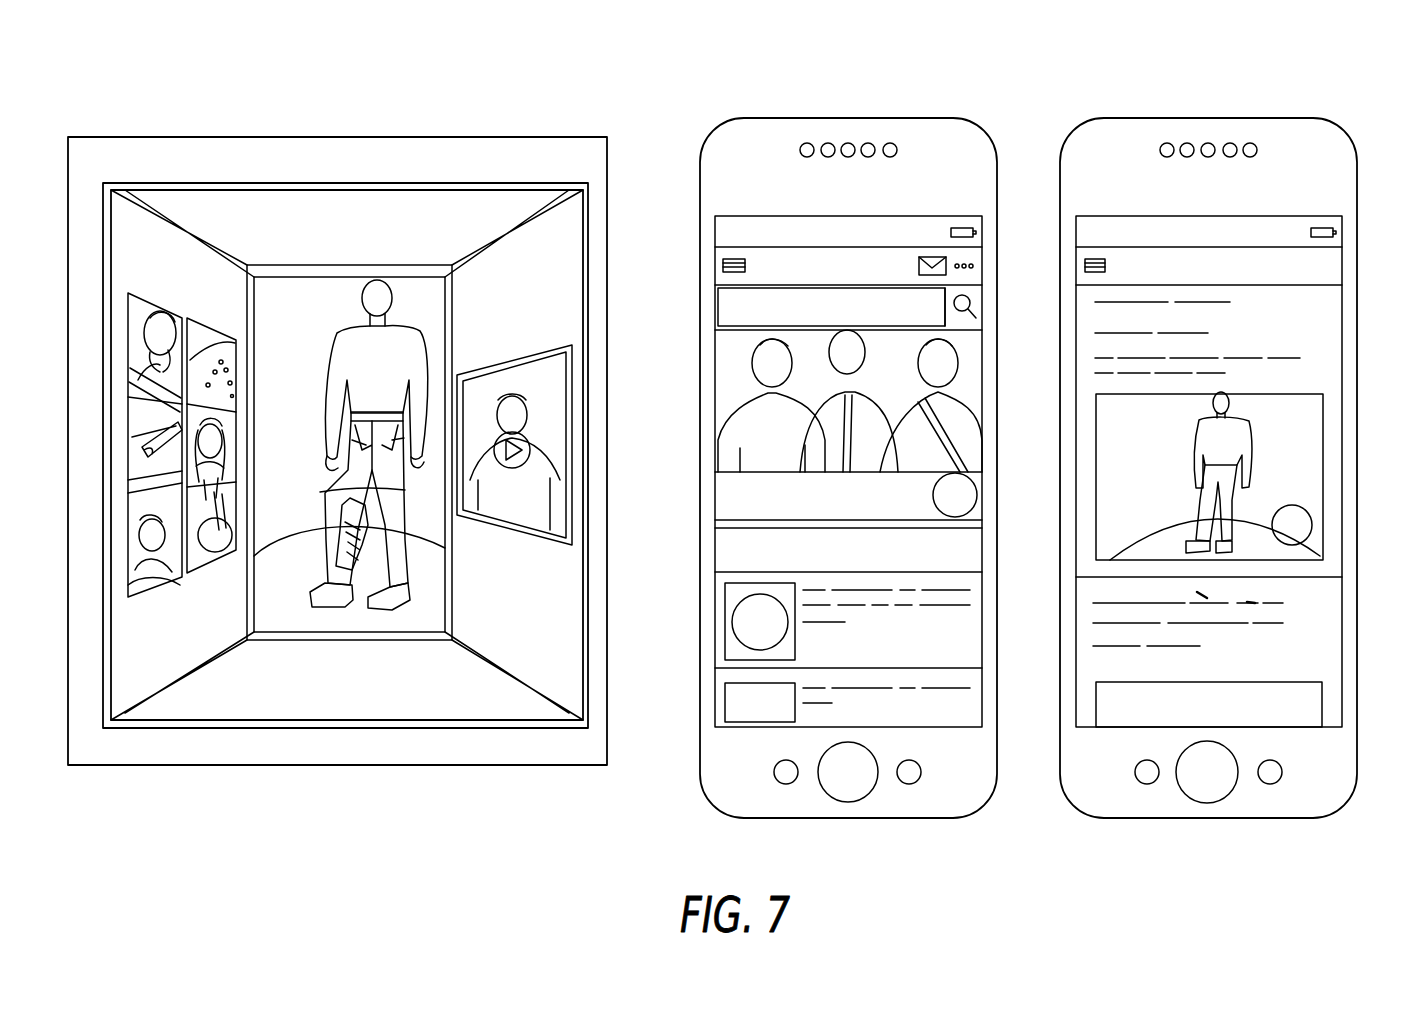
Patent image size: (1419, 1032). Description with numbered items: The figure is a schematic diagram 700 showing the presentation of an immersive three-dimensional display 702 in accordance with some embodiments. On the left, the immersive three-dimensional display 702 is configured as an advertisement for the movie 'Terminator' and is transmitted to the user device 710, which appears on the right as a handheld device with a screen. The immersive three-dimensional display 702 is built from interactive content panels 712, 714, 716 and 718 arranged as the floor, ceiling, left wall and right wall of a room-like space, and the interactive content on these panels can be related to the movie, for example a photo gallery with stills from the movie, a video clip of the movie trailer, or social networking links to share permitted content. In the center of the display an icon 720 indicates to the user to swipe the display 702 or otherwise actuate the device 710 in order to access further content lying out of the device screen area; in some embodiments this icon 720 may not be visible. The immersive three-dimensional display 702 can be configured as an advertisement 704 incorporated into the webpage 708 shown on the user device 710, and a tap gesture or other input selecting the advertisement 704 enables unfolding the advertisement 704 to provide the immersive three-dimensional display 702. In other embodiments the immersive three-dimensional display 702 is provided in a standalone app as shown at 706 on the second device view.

The schematic diagram 700 is at (1275, 51).
The immersive 3D display 702 is at (243, 695).
The advertisement 704 is at (908, 497).
The standalone app 706 is at (1289, 478).
The webpage 708 is at (910, 712).
The user device 710 is at (848, 803).
The interactive content panel 712 is at (406, 695).
The interactive content panel 714 is at (292, 218).
The interactive content panel 716 is at (123, 228).
The interactive content panel 718 is at (567, 224).
The icon 720 is at (354, 608).